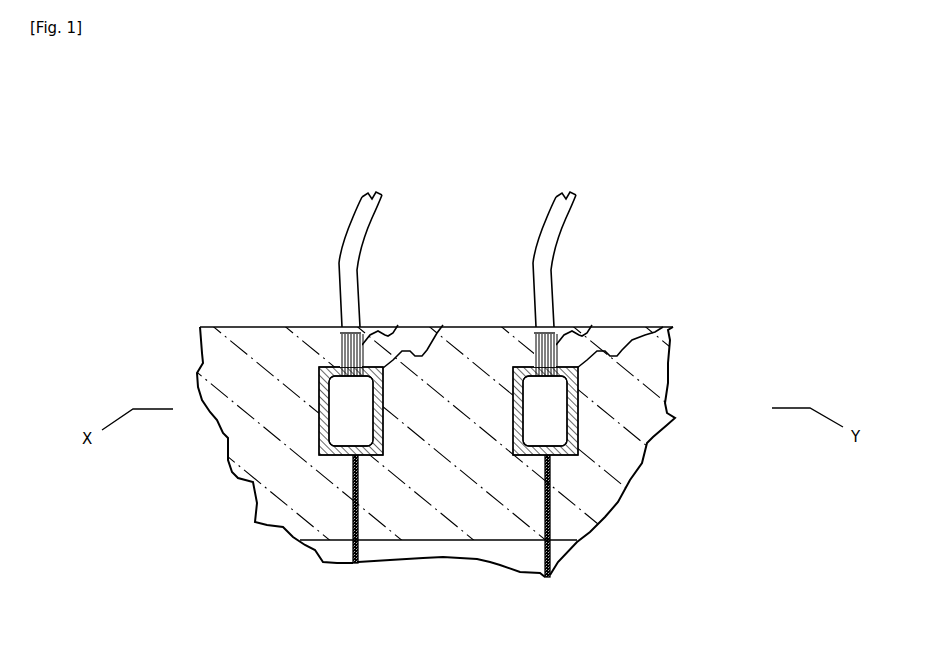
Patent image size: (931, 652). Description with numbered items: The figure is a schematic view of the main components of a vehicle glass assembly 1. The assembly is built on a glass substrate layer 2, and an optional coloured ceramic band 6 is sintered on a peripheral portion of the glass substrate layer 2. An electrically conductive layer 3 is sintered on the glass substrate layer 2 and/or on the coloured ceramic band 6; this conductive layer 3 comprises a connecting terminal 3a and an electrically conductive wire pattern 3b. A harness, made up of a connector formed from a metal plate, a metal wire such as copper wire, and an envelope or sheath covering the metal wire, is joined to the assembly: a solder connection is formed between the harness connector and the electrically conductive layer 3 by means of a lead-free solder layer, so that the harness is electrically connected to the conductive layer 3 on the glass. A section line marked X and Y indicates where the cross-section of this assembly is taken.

The vehicle glass assembly 1 is at (242, 304).
The glass substrate layer 2 is at (526, 562).
The electrically conductive layer 3 is at (495, 452).
The connecting terminal 3a is at (443, 325).
The electrically conductive wire pattern 3b is at (357, 542).
The coloured ceramic band 6 is at (453, 479).